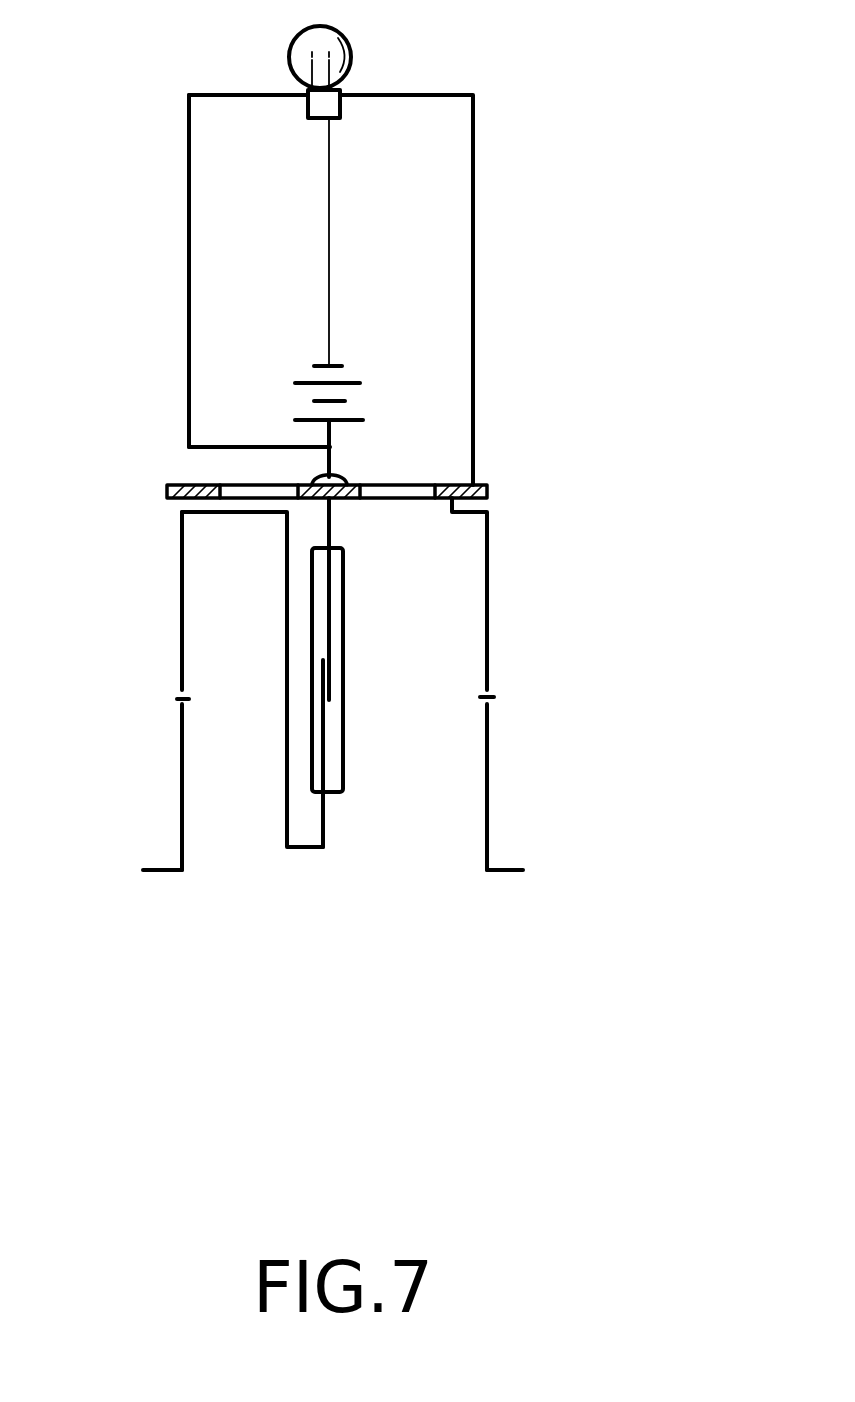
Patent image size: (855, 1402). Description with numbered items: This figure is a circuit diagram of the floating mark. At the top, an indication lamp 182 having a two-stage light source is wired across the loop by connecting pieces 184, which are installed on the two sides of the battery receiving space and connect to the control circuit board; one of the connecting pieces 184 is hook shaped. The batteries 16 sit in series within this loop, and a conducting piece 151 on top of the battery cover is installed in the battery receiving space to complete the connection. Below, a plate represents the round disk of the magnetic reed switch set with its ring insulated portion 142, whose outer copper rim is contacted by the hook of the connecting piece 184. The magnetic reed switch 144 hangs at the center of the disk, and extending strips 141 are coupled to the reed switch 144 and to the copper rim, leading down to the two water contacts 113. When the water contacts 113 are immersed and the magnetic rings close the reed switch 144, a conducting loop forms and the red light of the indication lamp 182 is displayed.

The indication lamp 182 is at (353, 50).
The connecting pieces 184 is at (188, 253).
The batteries 16 is at (358, 382).
The conducting piece 151 is at (247, 447).
The ring insulated portion 142 is at (408, 492).
The magnetic reed switch 144 is at (343, 612).
The extending strips 141 is at (182, 645).
The water contacts 113 is at (182, 792).